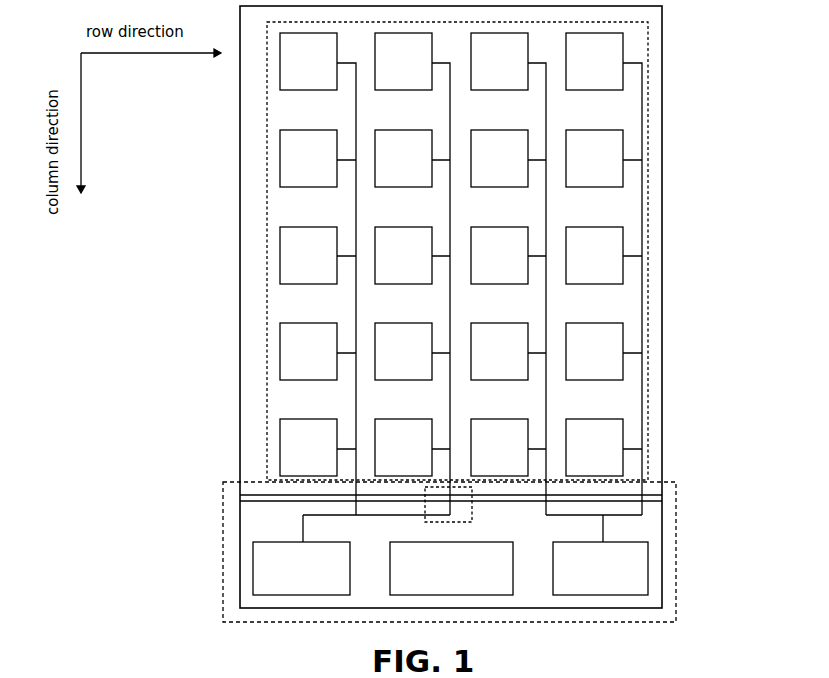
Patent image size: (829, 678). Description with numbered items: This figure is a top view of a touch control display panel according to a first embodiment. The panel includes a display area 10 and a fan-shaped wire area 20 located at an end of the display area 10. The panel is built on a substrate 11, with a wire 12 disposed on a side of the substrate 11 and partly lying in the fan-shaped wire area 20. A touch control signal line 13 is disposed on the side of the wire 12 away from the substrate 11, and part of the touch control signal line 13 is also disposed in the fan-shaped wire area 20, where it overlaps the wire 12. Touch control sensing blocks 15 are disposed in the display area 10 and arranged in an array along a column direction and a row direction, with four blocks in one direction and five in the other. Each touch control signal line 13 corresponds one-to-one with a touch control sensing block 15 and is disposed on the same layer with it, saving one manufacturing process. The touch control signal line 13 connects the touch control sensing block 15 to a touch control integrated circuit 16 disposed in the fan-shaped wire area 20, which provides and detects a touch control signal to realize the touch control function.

The display area 10 is at (650, 245).
The substrate 11 is at (653, 137).
The wire 12 is at (650, 492).
The touch control signal line 13 is at (647, 402).
The touch control sensing block 15 is at (618, 50).
The touch control integrated circuit 16 is at (643, 582).
The fan-shaped wire area 20 is at (678, 538).